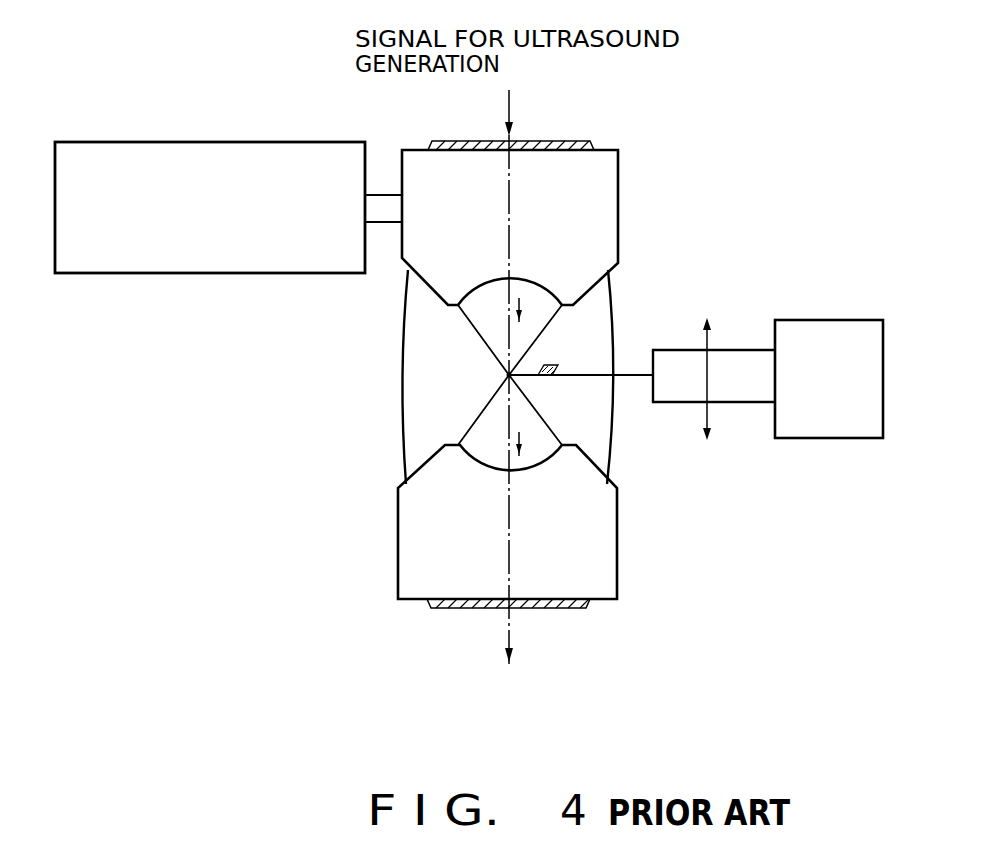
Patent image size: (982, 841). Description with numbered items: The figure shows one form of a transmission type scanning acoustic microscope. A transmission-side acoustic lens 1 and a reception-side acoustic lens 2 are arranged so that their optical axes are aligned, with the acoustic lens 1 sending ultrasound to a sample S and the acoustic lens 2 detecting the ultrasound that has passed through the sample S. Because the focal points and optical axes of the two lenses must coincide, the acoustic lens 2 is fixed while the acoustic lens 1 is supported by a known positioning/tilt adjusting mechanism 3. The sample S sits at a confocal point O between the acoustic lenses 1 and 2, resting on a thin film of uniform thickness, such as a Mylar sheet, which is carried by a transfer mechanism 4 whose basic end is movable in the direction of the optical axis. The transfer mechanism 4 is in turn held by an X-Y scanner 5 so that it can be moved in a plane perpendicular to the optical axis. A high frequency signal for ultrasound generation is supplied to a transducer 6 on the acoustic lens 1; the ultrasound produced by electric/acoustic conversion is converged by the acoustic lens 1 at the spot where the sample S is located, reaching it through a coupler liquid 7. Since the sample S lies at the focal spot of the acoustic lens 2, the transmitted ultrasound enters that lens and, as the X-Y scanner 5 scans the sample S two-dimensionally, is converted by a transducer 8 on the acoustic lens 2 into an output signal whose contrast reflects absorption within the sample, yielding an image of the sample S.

The transmission-side acoustic lens 1 is at (606, 193).
The reception-side acoustic lens 2 is at (606, 531).
The positioning/tilt adjusting mechanism 3 is at (306, 152).
The transfer mechanism 4 is at (677, 357).
The X-Y scanner 5 is at (838, 332).
The transducer 6 is at (574, 142).
The coupler liquid 7 is at (406, 375).
The transducer 8 is at (449, 609).
The sample S is at (558, 371).
The confocal point O is at (506, 375).